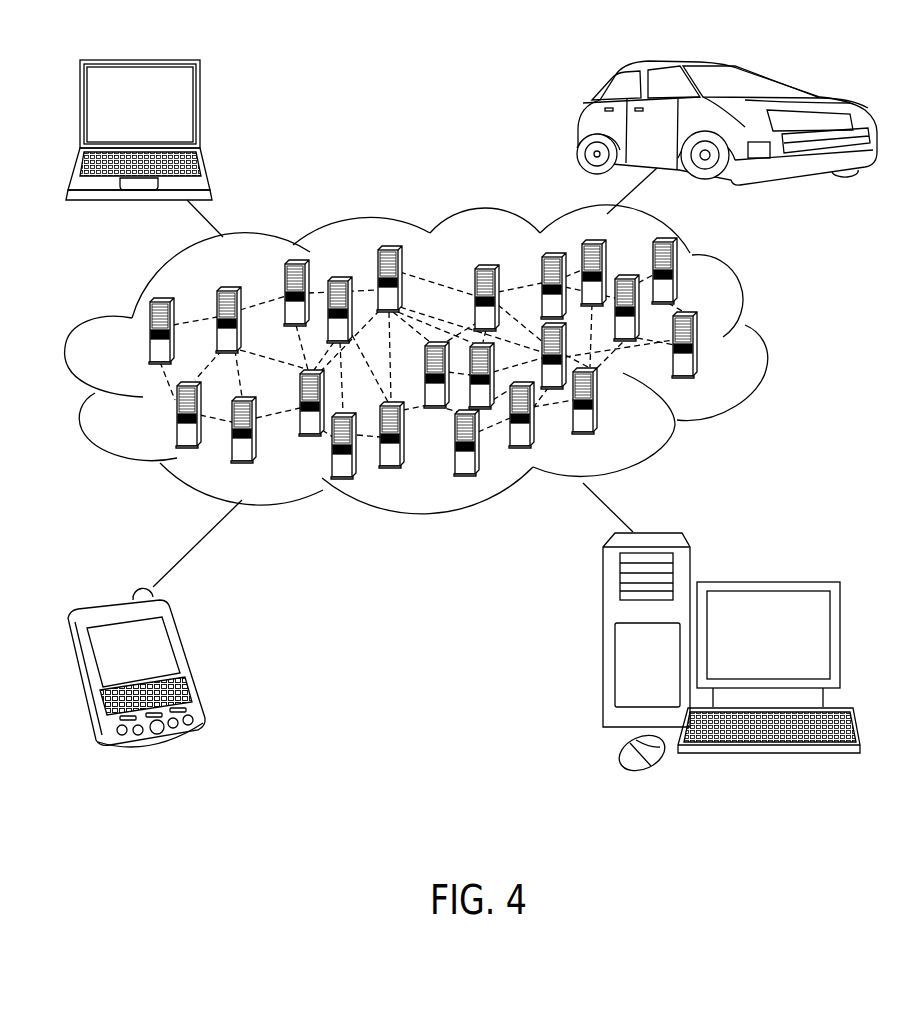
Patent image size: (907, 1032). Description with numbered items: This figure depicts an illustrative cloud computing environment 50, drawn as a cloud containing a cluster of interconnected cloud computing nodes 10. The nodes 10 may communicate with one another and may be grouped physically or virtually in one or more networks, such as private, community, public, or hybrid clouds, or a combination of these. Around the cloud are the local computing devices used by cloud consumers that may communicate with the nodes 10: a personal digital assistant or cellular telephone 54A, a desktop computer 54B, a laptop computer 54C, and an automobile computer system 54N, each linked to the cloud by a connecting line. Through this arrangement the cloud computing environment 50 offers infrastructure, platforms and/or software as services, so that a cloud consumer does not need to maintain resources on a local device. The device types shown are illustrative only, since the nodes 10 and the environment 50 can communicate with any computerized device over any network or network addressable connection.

The cloud computing node 10 is at (720, 366).
The cloud computing environment 50 is at (766, 341).
The personal digital assistant (PDA) or cellular telephone 54A is at (192, 661).
The desktop computer 54B is at (766, 580).
The laptop computer 54C is at (200, 112).
The automobile computer system 54N is at (579, 130).